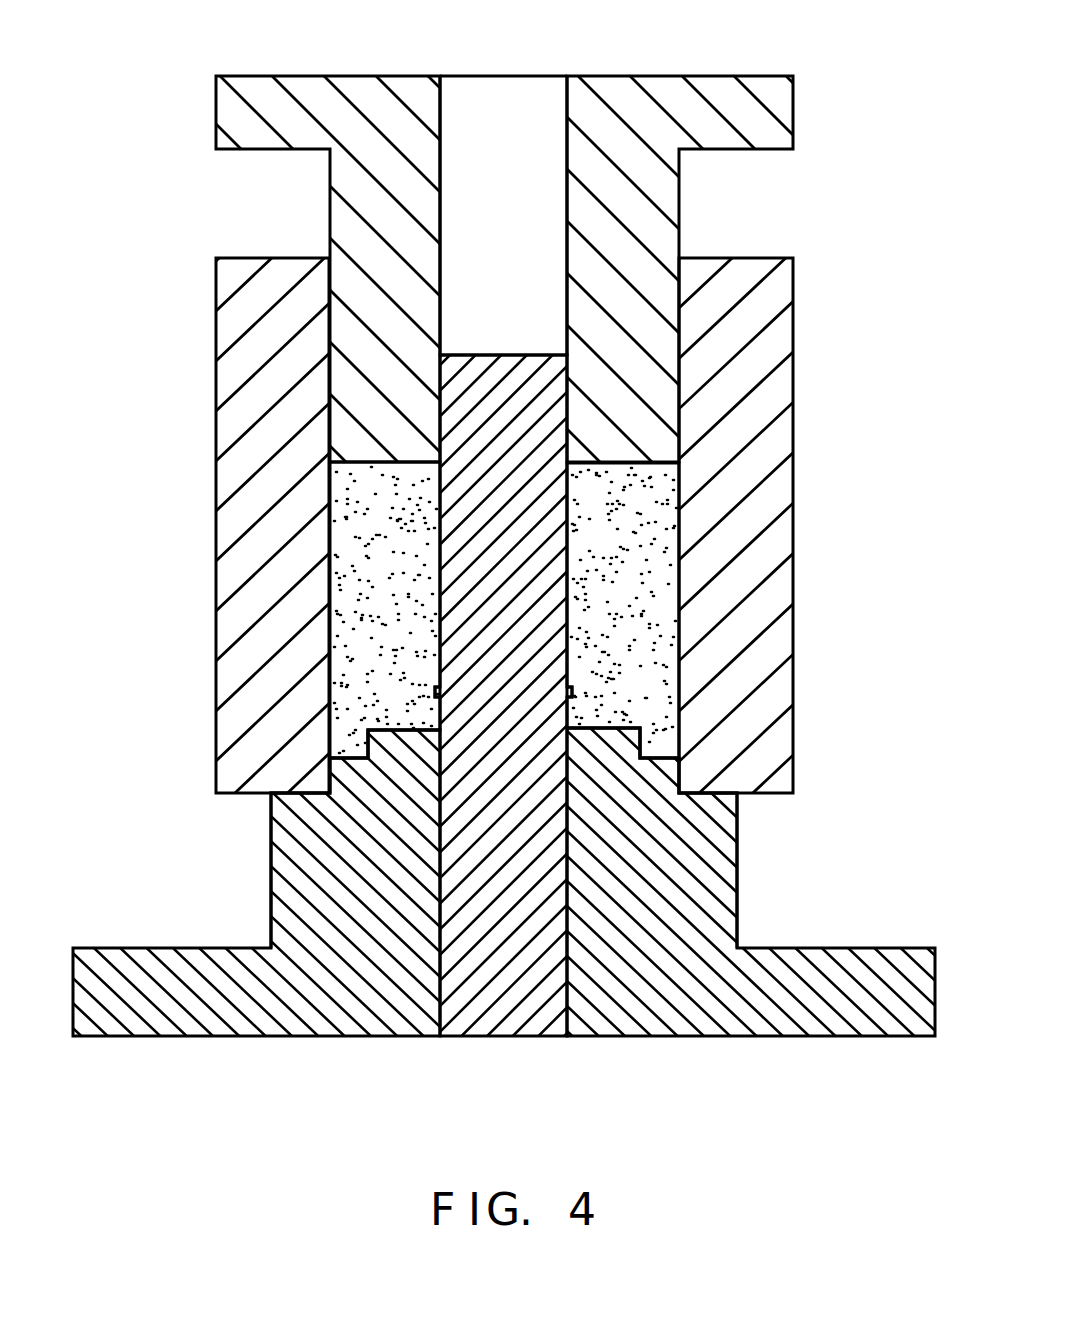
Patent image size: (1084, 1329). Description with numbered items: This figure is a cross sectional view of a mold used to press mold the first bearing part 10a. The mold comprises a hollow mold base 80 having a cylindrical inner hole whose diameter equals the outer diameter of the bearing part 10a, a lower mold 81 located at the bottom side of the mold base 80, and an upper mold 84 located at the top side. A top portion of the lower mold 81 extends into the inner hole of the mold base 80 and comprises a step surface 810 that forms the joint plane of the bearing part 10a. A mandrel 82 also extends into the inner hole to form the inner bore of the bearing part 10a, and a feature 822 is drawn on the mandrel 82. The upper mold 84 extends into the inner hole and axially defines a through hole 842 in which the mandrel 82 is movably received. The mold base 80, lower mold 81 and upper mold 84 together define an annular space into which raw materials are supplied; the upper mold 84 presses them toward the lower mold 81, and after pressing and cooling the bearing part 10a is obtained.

The upper mold 84 is at (631, 212).
The through hole 842 is at (497, 120).
The mold base 80 is at (743, 623).
The first bearing part 10a is at (600, 550).
The protrusion of core rod 822 is at (563, 695).
The mandrel 82 is at (510, 973).
The lower mold 81 is at (815, 1007).
The step surface 810 is at (608, 728).